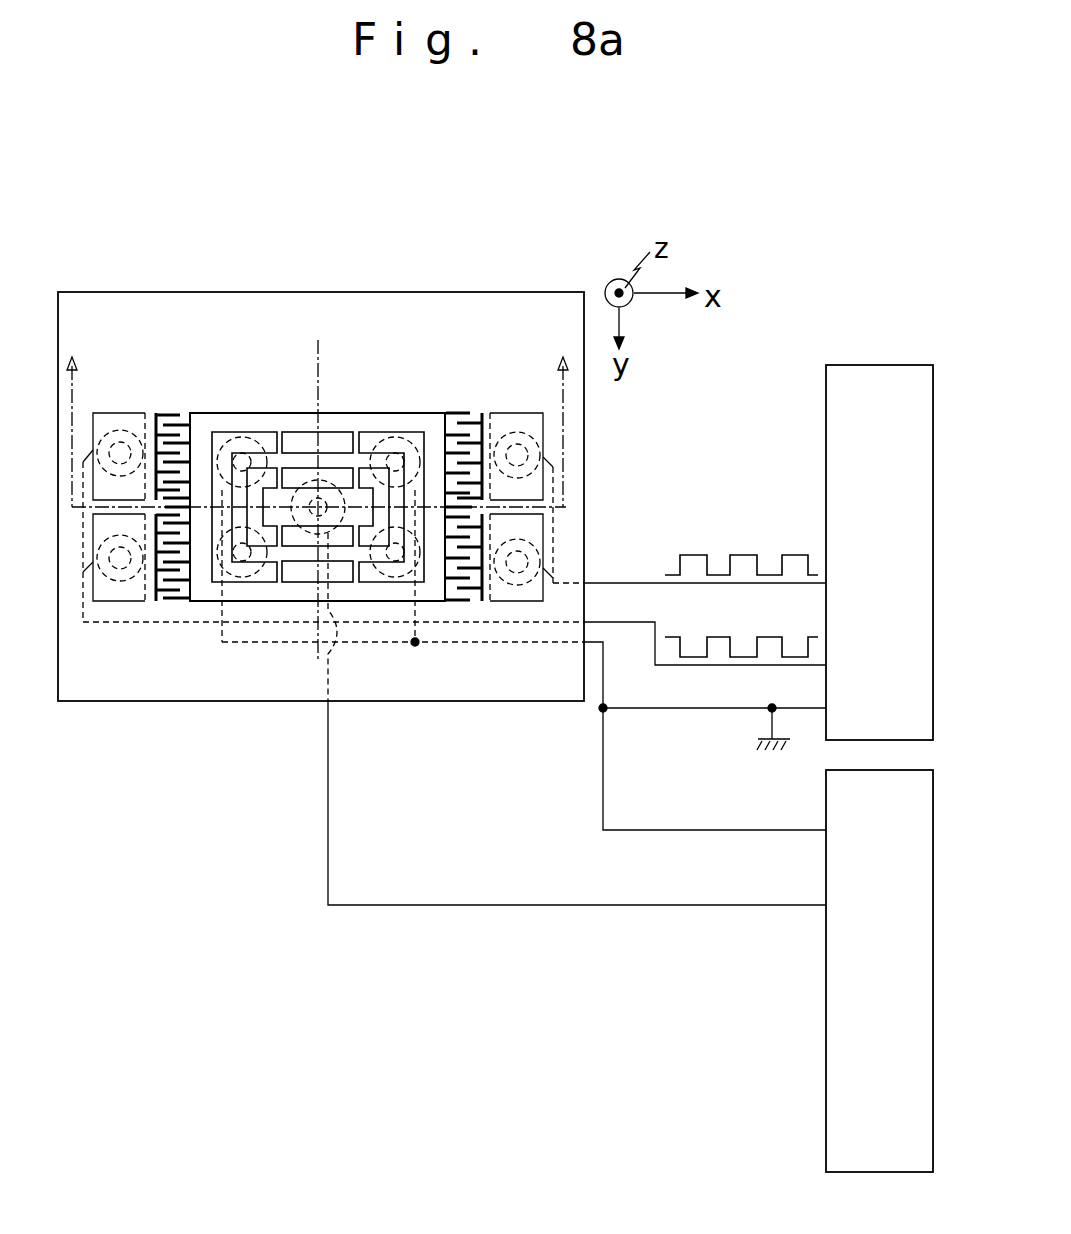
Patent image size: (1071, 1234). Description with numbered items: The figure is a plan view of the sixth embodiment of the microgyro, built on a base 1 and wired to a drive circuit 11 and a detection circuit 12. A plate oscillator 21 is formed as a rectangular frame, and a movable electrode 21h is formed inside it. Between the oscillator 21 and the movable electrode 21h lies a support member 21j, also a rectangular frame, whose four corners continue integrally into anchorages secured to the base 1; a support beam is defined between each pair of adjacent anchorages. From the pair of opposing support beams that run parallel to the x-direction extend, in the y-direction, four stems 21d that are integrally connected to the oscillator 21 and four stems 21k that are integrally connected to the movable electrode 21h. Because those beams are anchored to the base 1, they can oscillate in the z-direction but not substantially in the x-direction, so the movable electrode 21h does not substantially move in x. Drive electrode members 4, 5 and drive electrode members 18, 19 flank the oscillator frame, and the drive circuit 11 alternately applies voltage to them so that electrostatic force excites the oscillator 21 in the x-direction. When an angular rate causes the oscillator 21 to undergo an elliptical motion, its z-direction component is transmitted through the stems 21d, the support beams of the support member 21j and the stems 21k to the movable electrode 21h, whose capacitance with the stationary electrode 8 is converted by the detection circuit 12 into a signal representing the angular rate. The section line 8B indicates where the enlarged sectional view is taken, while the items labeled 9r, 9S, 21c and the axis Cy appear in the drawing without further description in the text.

The base 1 is at (172, 292).
The drive electrode member 4 is at (130, 410).
The drive electrode member 5 is at (507, 413).
The stationary electrode 8 is at (372, 482).
The section line 8B— 8B is at (321, 411).
The rotor-side anchor 9r is at (207, 437).
The stator-side anchor 9S is at (398, 450).
The drive circuit 11 is at (852, 365).
The detection circuit 12 is at (822, 1070).
The drive electrode member 18 is at (115, 602).
The drive electrode member 19 is at (512, 605).
The plate oscillator 21 is at (258, 408).
The right bracket beam of frame 21c is at (360, 423).
The stems 21d is at (280, 443).
The movable electrode 21h is at (303, 513).
The support member 21j is at (303, 462).
The stems 21k is at (280, 472).
The center axis Cy is at (322, 352).